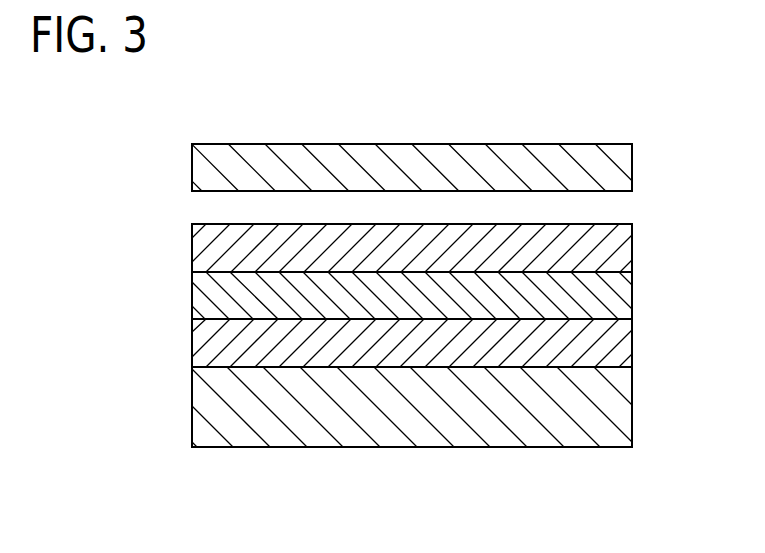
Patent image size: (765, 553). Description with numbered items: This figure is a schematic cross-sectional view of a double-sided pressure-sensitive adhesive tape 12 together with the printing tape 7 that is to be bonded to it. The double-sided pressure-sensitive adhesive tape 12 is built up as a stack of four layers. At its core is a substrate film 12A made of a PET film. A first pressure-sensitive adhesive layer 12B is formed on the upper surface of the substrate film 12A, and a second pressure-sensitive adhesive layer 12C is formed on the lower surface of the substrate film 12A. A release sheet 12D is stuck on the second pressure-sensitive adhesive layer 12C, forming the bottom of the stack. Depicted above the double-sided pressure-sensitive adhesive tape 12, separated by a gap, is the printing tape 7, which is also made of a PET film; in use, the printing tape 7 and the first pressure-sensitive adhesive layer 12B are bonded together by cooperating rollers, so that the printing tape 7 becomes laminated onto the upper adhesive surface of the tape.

The printing tape 7 is at (587, 157).
The double-sided pressure-sensitive adhesive tape 12 is at (402, 335).
The substrate film 12A is at (217, 298).
The first pressure-sensitive adhesive layer 12B is at (217, 250).
The second pressure-sensitive adhesive layer 12C is at (217, 343).
The release sheet 12D is at (217, 411).